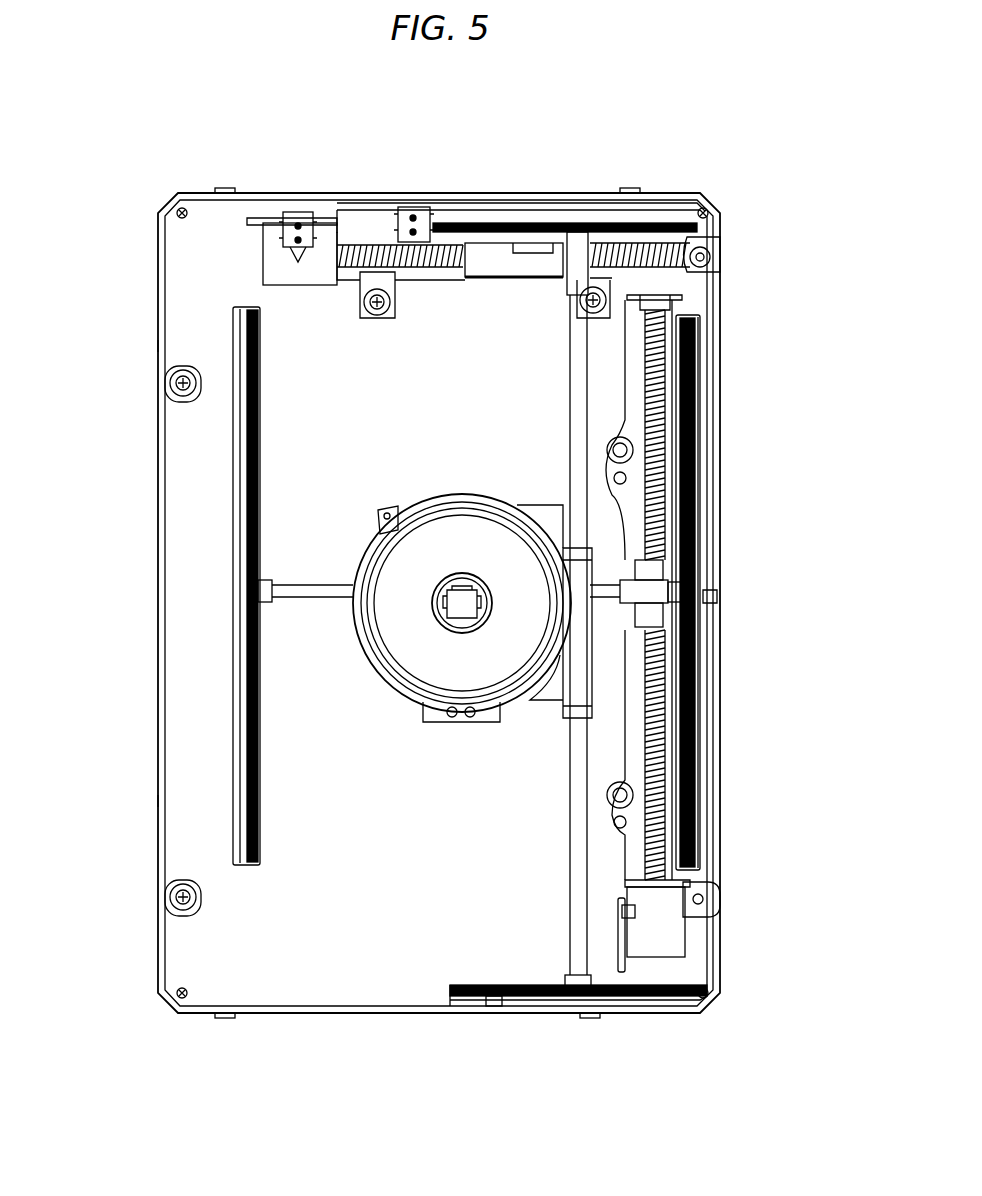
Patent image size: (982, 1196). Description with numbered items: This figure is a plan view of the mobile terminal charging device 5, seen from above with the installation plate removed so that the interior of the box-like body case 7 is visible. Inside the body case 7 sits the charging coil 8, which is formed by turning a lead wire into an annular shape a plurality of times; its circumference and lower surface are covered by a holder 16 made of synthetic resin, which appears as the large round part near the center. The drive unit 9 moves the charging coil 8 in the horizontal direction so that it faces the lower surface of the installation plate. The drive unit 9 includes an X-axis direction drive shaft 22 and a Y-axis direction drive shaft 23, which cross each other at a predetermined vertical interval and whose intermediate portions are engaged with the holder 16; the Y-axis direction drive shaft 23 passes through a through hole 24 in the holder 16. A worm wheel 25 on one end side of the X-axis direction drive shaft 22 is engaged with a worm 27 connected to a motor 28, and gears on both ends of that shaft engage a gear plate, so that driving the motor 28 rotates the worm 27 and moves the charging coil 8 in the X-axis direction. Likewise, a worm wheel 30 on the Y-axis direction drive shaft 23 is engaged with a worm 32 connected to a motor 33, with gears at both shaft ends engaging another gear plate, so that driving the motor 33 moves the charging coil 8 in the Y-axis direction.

The mobile terminal charging device 5 is at (117, 603).
The body case 7 is at (160, 215).
The charging coil 8 is at (407, 617).
The drive unit 9 is at (662, 247).
The holder 16 is at (440, 722).
The X-axis direction drive shaft 22 is at (285, 598).
The Y-axis direction drive shaft 23 is at (583, 355).
The through hole 24 is at (568, 707).
The worm wheel 25 is at (647, 613).
The worm 27 is at (665, 395).
The motor 28 is at (653, 918).
The worm wheel 30 is at (575, 267).
The worm 32 is at (356, 248).
The motor 33 is at (272, 255).